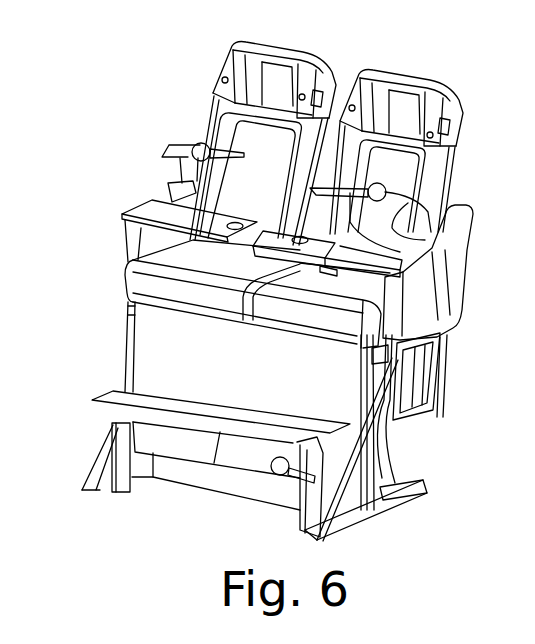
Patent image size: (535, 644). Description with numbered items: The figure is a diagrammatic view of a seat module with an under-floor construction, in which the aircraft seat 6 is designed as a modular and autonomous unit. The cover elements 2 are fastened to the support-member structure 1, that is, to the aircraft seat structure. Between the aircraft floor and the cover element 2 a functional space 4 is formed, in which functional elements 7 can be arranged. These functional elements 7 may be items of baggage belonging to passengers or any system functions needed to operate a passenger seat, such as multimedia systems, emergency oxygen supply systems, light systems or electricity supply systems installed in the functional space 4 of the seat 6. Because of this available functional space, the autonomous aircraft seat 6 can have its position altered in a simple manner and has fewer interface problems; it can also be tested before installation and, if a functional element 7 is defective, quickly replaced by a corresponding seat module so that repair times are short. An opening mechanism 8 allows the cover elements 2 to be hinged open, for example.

The support-member structure 1 is at (255, 291).
The aircraft seat 6 is at (152, 347).
The cover element 2 is at (112, 391).
The functional space 4 is at (227, 482).
The functional element 7 is at (197, 452).
The opening mechanism 8 is at (328, 427).